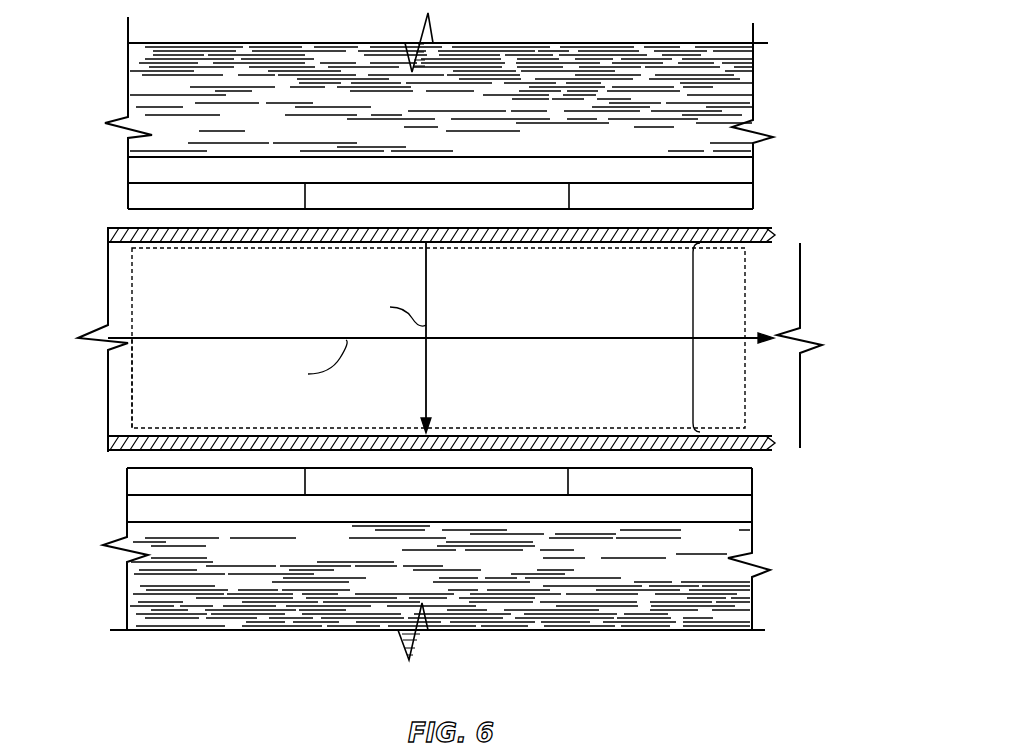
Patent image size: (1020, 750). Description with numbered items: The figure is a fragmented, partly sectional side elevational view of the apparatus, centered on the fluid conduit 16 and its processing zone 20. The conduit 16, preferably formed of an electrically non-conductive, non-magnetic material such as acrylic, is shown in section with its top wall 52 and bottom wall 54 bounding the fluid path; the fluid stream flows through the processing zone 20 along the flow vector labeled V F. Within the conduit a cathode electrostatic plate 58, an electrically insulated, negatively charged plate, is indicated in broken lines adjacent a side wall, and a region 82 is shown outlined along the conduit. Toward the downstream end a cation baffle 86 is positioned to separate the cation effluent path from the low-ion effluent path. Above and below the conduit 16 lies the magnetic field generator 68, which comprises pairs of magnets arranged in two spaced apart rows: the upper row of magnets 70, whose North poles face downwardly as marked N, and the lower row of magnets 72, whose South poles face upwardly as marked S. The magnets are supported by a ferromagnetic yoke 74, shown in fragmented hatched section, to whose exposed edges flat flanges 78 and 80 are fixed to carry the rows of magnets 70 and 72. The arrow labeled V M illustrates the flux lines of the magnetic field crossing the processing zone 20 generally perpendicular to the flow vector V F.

The magnetic field generator 68 is at (753, 96).
The flange 78 is at (133, 167).
The upper row of magnets 70 is at (133, 194).
The processing zone 20 is at (387, 226).
The top wall 52 is at (758, 235).
The bottom wall 54 is at (650, 447).
The fluid conduit 16 is at (753, 440).
The fluid region boundary 82 is at (122, 292).
The cathode electrostatic plate 58 is at (132, 330).
The cation baffle 86 is at (787, 287).
The lower row of magnets 72 is at (133, 482).
The flange 80 is at (133, 510).
The ferromagnetic yoke 74 is at (752, 600).